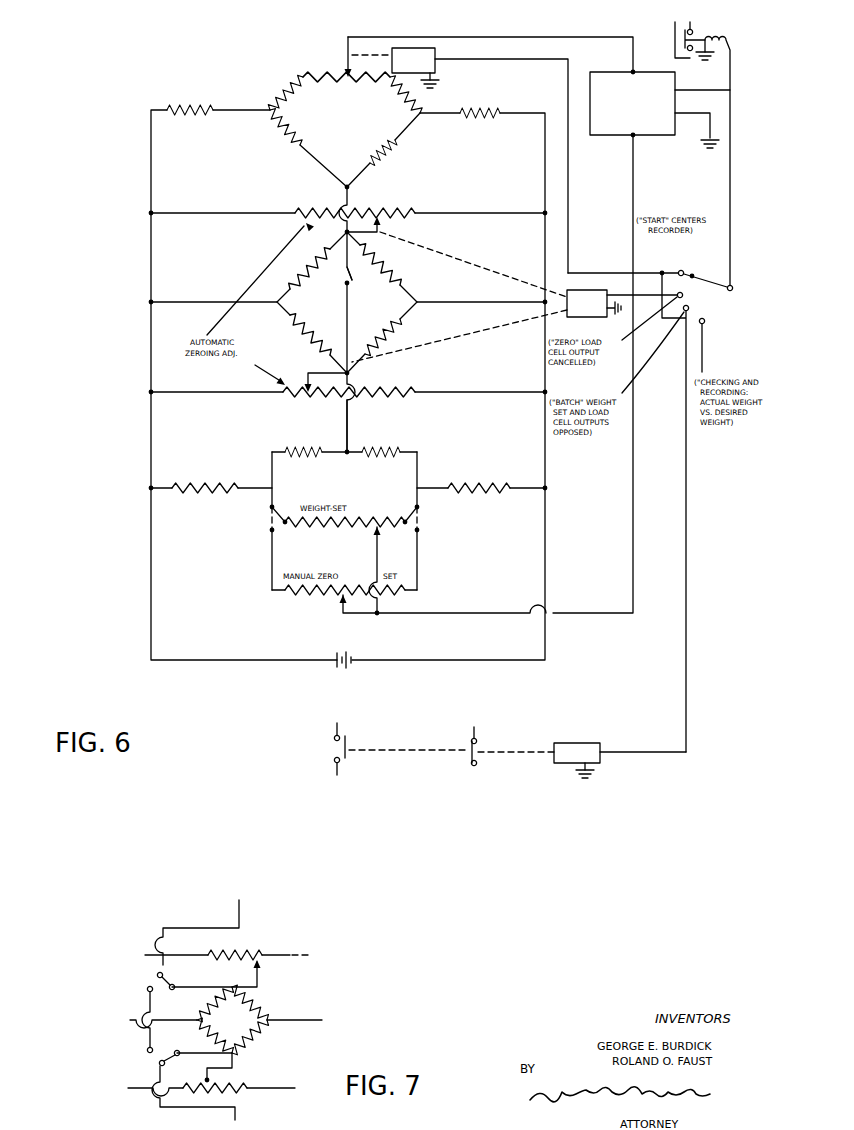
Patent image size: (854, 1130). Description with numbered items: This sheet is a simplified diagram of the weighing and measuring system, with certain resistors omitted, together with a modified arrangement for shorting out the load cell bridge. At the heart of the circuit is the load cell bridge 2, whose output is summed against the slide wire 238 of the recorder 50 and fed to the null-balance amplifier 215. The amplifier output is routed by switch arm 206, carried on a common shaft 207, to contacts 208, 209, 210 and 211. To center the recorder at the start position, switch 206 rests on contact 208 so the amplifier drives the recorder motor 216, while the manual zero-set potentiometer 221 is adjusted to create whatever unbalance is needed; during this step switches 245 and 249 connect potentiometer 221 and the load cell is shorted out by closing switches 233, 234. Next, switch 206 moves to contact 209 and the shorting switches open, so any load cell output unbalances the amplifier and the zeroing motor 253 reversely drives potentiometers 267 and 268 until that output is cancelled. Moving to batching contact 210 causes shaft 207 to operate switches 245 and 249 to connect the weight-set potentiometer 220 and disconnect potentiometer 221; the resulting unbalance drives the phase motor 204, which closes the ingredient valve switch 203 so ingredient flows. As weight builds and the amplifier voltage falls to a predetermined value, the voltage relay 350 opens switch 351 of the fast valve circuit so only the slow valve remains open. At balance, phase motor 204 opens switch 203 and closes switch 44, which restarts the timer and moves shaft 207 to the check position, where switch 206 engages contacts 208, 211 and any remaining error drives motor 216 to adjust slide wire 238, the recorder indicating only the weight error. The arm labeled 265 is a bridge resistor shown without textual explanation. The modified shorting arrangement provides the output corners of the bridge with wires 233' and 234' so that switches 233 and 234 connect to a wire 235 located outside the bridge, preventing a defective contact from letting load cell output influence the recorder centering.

In FIG. 6, the load cell bridge 2 is at (402, 325).
In FIG. 6, the switch 44 is at (345, 742).
In FIG. 6, the recorder 50 is at (345, 131).
In FIG. 6, the ingredient valve switch 203 is at (475, 744).
In FIG. 6, the phase motor 204 is at (620, 751).
In FIG. 6, the switch arm 206 is at (705, 283).
In FIG. 6, the common shaft 207 is at (733, 290).
In FIG. 6, the contact 208 is at (680, 270).
In FIG. 6, the contact 209 is at (683, 296).
In FIG. 6, the batching contact 210 is at (689, 309).
In FIG. 6, the contact 211 is at (705, 323).
In FIG. 6, the null-balance amplifier 215 is at (641, 341).
In FIG. 6, the recorder motor 216 is at (490, 155).
In FIG. 6, the weight-set potentiometer 220 is at (415, 565).
In FIG. 6, the manual zero-set potentiometer 221 is at (345, 600).
In FIG. 6, the load cell shorting switch 233 is at (392, 262).
In FIG. 7, the load cell shorting switch 233 is at (163, 982).
In FIG. 6, the load cell shorting switch 234 is at (393, 281).
In FIG. 7, the load cell shorting switch 234 is at (151, 1036).
In FIG. 6, the wire 235 is at (349, 320).
In FIG. 7, the wire 235 is at (148, 1032).
In FIG. 6, the slide wire 238 is at (346, 59).
In FIG. 6, the switch 245 is at (412, 511).
In FIG. 6, the switch 249 is at (275, 511).
In FIG. 6, the zeroing motor 253 is at (594, 298).
In FIG. 6, the bridge resistor 265 is at (378, 160).
In FIG. 6, the potentiometer 267 is at (355, 209).
In FIG. 7, the potentiometer 267 is at (254, 948).
In FIG. 6, the potentiometer 268 is at (349, 412).
In FIG. 7, the potentiometer 268 is at (258, 1081).
In FIG. 6, the voltage relay 350 is at (722, 38).
In FIG. 6, the switch 351 is at (692, 29).
In FIG. 7, the wire 233' is at (201, 977).
In FIG. 7, the wire 234' is at (188, 1043).